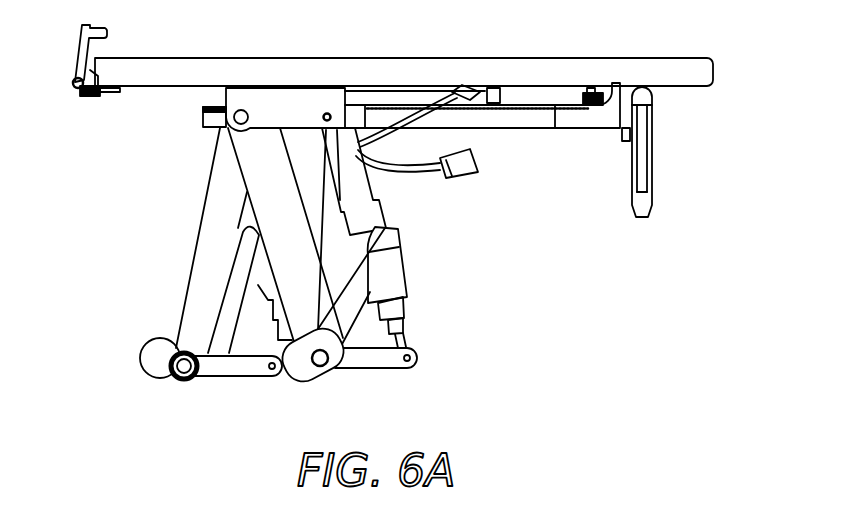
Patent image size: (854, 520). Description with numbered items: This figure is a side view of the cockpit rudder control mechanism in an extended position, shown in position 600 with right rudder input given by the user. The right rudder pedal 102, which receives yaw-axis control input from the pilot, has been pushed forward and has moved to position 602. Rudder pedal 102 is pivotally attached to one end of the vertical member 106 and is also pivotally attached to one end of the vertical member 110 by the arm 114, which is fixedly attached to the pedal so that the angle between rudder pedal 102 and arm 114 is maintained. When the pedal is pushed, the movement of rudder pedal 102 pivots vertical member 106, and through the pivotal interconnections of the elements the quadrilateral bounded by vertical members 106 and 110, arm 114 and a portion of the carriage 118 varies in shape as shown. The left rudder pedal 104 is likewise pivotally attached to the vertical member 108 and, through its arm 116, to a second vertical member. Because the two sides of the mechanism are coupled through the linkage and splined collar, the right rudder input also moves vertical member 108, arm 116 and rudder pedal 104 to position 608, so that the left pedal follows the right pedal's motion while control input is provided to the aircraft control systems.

The rudder pedal 102 is at (385, 262).
The rudder pedal 104 is at (160, 345).
The vertical member 106 is at (250, 155).
The vertical member 108 is at (222, 157).
The vertical member 110 is at (372, 220).
The arm 114 is at (355, 366).
The arm 116 is at (243, 373).
The carriage 118 is at (290, 102).
The position 600 is at (170, 430).
The position 602 is at (305, 373).
The position 608 is at (172, 372).